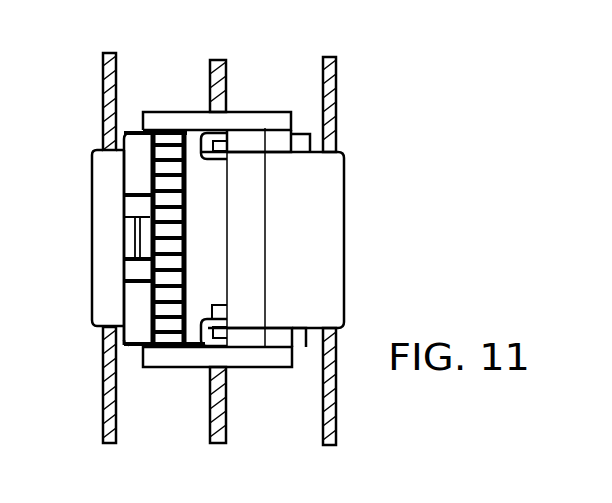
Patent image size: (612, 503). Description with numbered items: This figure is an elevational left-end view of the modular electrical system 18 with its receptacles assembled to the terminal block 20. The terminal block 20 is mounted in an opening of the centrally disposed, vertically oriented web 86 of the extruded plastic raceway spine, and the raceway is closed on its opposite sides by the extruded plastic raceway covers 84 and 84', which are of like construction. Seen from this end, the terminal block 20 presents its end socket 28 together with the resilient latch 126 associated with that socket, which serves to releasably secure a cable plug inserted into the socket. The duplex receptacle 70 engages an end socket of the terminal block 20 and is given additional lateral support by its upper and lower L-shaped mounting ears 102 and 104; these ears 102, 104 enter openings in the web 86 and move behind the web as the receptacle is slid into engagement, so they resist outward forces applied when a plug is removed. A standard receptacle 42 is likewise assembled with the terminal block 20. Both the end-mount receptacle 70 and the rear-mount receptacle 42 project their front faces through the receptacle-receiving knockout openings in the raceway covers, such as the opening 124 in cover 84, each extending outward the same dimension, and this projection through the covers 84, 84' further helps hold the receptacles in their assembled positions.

The modular electrical system 18 is at (51, 157).
The terminal block 20 is at (268, 112).
The second socket 28 is at (173, 148).
The standard receptacle 42 is at (98, 278).
The duplex receptacle 70 is at (327, 255).
The raceway cover 84 is at (352, 251).
The raceway cover 84' is at (86, 248).
The web 86 is at (226, 83).
The upper L-shaped mounting ear 102 is at (217, 162).
The lower L-shaped mounting ear 104 is at (217, 306).
The receptacle receiving knockout 124 is at (338, 326).
The latch 126 is at (143, 242).